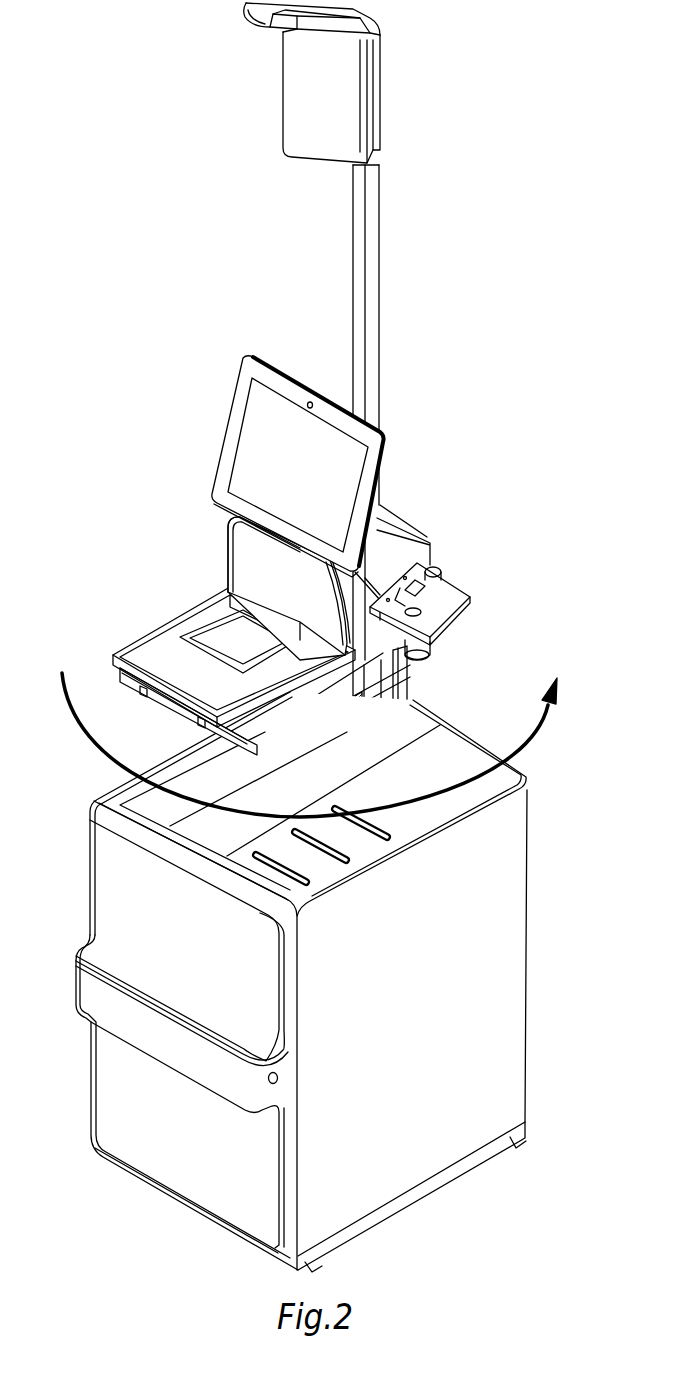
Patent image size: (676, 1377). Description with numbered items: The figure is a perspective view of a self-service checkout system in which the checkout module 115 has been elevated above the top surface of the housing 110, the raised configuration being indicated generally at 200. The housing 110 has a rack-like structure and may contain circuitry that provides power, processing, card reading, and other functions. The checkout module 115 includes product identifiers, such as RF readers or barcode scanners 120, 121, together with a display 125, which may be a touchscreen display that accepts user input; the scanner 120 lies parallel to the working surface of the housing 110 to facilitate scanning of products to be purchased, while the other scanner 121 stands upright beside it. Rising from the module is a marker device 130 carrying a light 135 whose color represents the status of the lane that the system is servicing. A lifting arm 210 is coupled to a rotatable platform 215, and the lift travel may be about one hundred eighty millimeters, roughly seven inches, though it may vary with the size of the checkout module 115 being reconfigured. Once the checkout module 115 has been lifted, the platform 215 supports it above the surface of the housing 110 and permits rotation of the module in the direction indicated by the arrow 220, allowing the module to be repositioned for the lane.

The elevated position indication 200 is at (140, 290).
The housing 110 is at (527, 955).
The checkout module 115 is at (216, 553).
The barcode scanner 120 is at (192, 637).
The barcode scanner 121 is at (245, 562).
The display 125 is at (218, 424).
The marker device 130 is at (380, 297).
The light 135 is at (246, 17).
The lifting arm 210 is at (410, 690).
The rotatable platform 215 is at (155, 705).
The arrow 220 is at (100, 752).